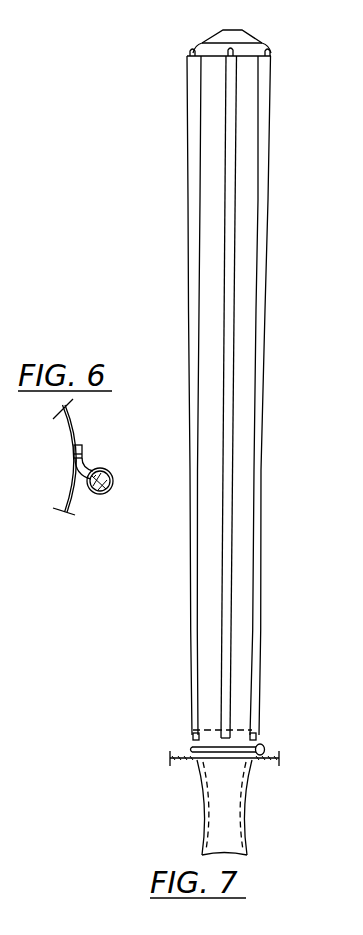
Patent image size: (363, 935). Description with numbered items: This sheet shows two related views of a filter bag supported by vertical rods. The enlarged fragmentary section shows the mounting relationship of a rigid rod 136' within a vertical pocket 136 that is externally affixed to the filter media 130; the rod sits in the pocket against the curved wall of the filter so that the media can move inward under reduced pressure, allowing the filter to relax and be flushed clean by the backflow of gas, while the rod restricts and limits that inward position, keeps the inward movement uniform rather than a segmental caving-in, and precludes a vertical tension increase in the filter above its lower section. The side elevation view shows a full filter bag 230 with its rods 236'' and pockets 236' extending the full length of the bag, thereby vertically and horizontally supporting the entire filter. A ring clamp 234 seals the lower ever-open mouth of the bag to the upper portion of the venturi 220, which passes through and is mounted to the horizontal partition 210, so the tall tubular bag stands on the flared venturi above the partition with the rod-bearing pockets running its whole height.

In FIG. 6, the filter 130 is at (61, 412).
In FIG. 6, the vertical pocket 136 is at (118, 446).
In FIG. 6, the rigid rod 136' is at (131, 468).
In FIG. 7, the rod 236'' is at (264, 37).
In FIG. 7, the tubular column 230 is at (246, 168).
In FIG. 7, the pocket 236' is at (296, 395).
In FIG. 7, the clamp band 234 is at (265, 748).
In FIG. 7, the base plate 210 is at (270, 760).
In FIG. 7, the pedestal base 220 is at (246, 810).